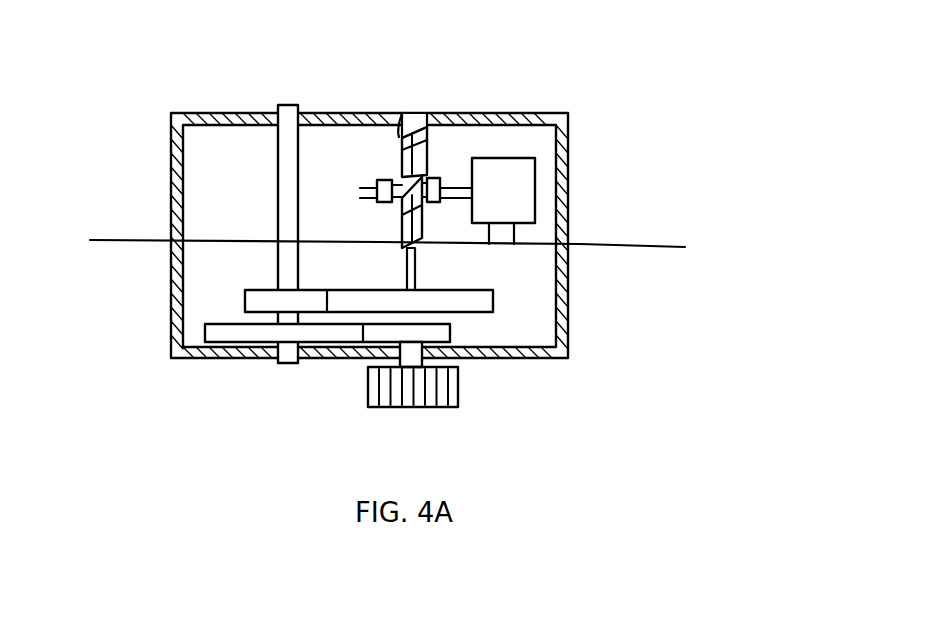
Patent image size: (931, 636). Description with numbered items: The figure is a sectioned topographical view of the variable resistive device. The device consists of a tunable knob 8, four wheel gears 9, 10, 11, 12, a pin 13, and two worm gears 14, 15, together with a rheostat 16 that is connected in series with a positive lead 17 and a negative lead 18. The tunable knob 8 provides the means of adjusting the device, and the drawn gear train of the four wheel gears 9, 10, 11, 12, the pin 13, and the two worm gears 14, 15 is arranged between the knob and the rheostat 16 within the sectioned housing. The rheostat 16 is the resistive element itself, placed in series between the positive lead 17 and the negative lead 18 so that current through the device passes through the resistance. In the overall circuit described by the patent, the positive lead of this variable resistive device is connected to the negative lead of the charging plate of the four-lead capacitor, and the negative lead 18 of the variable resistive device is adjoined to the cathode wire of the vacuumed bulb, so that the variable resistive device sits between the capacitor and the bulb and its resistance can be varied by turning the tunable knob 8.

The tunable knob 8 is at (457, 400).
The wheel gear 9 is at (450, 335).
The wheel gear 10 is at (493, 300).
The wheel gear 11 is at (210, 350).
The wheel gear 12 is at (245, 290).
The pin 13 is at (296, 363).
The worm gear 14 is at (414, 113).
The worm gear 15 is at (388, 180).
The rheostat 16 is at (535, 185).
The positive lead 17 is at (125, 240).
The negative lead 18 is at (658, 247).